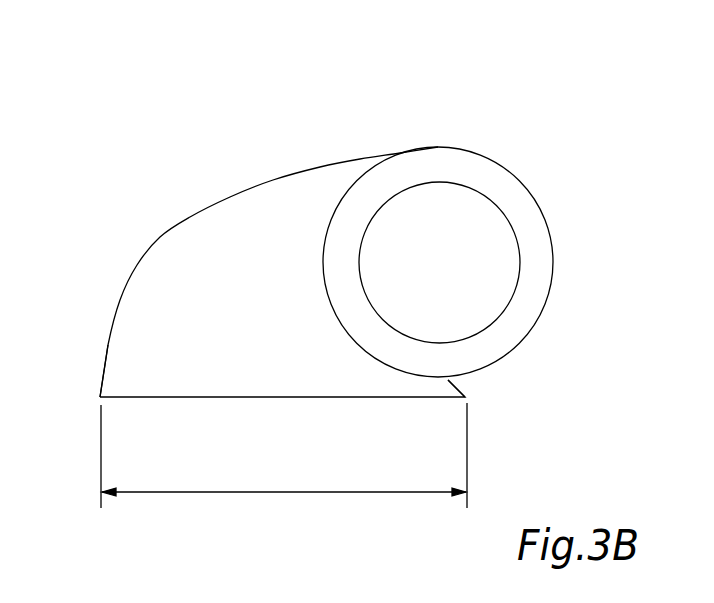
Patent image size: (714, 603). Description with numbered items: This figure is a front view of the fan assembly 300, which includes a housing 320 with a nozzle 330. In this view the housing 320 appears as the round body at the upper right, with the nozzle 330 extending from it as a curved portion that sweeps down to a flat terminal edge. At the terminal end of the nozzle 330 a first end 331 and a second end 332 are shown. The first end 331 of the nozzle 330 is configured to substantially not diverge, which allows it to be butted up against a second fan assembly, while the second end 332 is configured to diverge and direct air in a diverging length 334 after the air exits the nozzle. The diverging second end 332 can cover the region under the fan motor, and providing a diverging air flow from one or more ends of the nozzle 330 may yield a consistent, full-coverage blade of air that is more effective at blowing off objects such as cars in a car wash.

The fan assembly 300 is at (573, 80).
The housing 320 is at (498, 180).
The nozzle 330 is at (147, 282).
The first end 331 is at (119, 390).
The second end 332 is at (453, 391).
The diverging length 334 is at (283, 498).